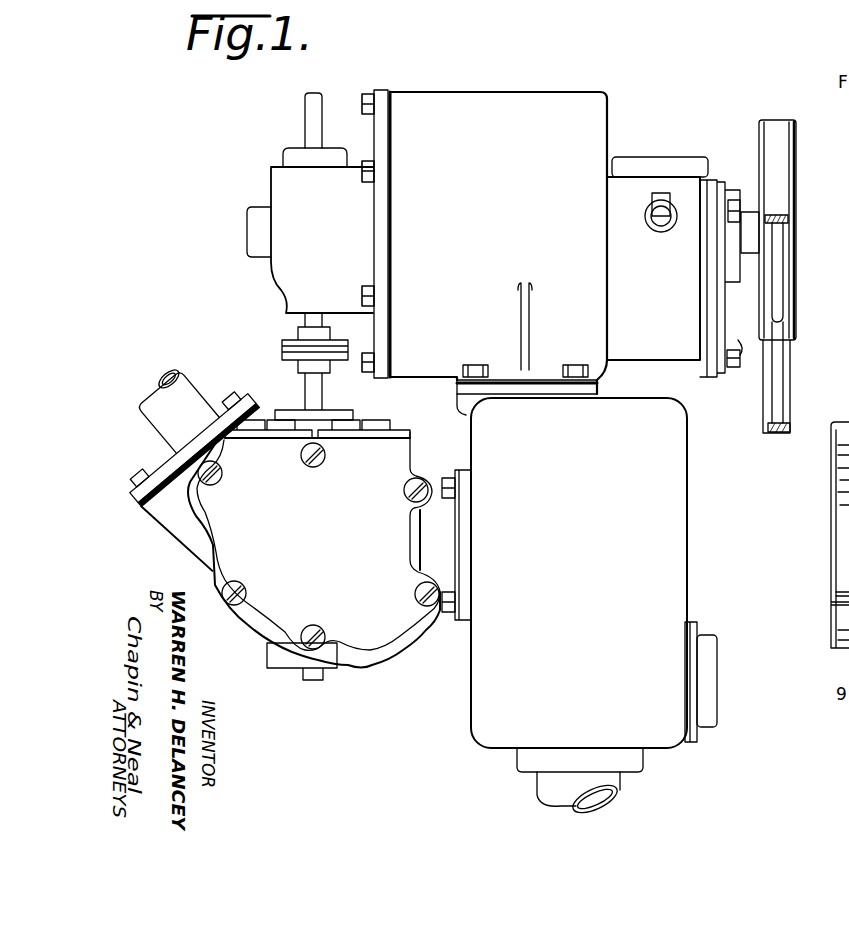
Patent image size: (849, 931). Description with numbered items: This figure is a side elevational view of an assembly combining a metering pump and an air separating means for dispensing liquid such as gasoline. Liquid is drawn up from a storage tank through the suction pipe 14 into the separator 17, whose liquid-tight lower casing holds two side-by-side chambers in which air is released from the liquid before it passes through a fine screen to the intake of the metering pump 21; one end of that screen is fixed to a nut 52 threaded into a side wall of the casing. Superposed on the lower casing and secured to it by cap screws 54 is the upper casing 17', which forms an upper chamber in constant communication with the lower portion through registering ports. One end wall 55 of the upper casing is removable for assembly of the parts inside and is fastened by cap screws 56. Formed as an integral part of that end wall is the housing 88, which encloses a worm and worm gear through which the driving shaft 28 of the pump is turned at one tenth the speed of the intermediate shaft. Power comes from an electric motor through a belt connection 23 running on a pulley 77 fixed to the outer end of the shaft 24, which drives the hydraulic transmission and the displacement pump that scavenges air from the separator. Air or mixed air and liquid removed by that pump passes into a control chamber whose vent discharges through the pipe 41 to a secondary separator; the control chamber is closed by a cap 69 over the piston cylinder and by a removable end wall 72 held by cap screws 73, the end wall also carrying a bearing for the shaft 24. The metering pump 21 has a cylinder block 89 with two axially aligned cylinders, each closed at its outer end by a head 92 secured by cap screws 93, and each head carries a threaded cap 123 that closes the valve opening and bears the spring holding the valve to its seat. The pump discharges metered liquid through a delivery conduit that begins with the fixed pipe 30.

The suction pipe 14 is at (556, 796).
The separator 17 is at (569, 600).
The upper casing 17' is at (498, 243).
The metering pump 21 is at (264, 658).
The belt connection 23 is at (771, 436).
The shaft 24 is at (743, 236).
The driving shaft 28 is at (312, 120).
The fixed pipe 30 is at (143, 400).
The pipe 41 is at (657, 200).
The nut 52 is at (708, 688).
The cap screws 54 is at (578, 364).
The end wall 55 is at (384, 96).
The cap screws 56 is at (364, 100).
The cap 69 is at (693, 160).
The end wall 72 is at (720, 378).
The cap screws 73 is at (740, 368).
The pulley 77 is at (795, 287).
The housing 88 is at (310, 230).
The cylinder block 89 is at (333, 414).
The head 92 is at (314, 556).
The cap screws 93 is at (406, 490).
The cap 123 is at (372, 420).